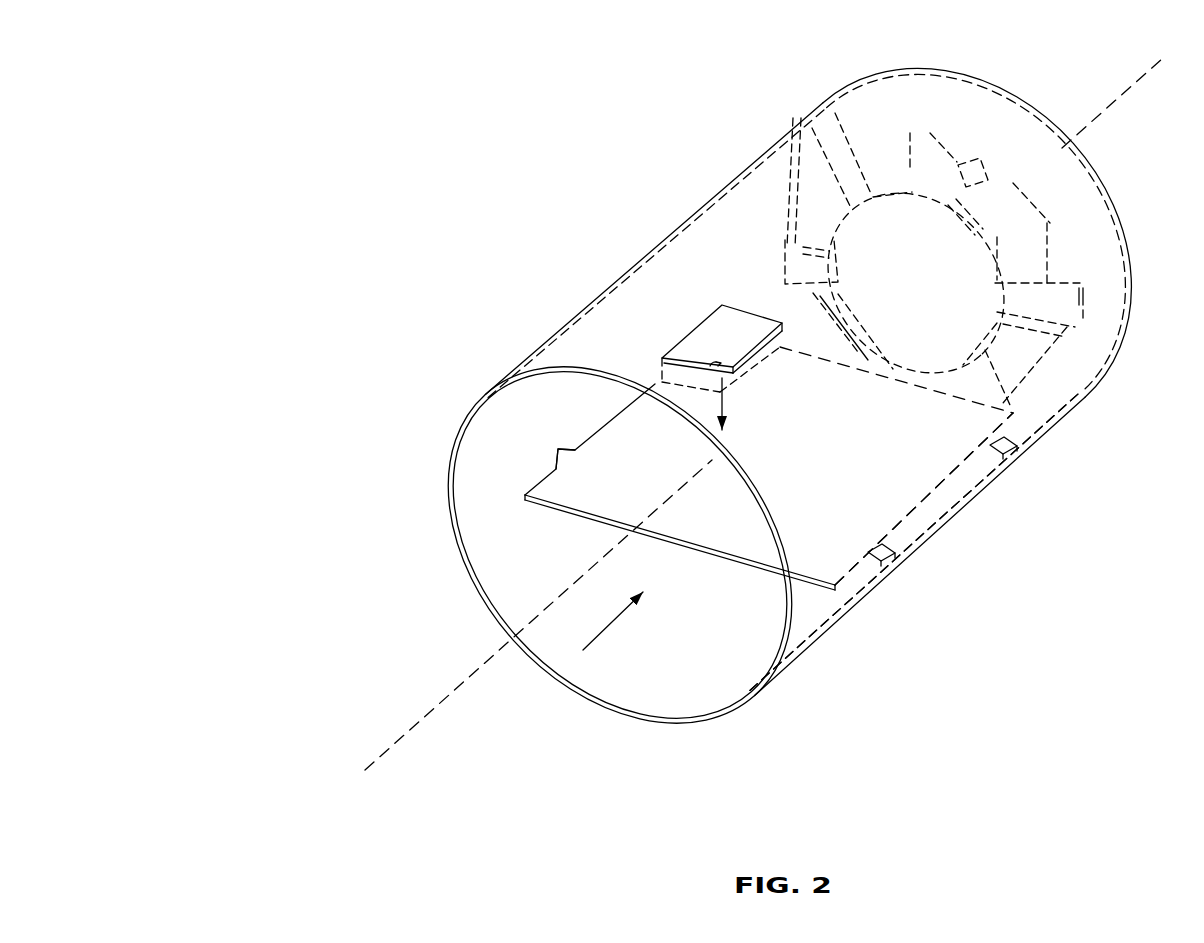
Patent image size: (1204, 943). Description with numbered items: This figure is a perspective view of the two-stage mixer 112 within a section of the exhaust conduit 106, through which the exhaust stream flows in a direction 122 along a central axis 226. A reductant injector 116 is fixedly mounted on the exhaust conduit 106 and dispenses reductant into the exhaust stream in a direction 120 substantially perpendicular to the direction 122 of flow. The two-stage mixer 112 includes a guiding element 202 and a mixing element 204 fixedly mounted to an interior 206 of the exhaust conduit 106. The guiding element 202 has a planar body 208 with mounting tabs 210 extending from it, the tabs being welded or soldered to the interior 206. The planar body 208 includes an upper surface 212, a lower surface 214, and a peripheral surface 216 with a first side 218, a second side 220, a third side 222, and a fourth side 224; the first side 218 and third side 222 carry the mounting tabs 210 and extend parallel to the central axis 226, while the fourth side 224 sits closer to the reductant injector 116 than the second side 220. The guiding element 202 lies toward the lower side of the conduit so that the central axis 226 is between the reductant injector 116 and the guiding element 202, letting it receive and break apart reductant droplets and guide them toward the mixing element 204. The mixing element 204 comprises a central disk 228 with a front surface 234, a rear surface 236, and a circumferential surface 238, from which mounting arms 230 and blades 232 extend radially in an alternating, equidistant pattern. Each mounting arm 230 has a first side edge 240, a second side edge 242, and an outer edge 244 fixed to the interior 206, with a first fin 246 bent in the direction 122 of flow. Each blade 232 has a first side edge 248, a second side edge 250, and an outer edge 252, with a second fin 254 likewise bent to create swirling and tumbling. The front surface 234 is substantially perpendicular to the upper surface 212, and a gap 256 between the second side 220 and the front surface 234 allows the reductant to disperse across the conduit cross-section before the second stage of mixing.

The exhaust conduit 106 is at (783, 421).
The two-stage mixer 112 is at (734, 421).
The reductant injector 116 is at (690, 350).
The direction 120 is at (727, 405).
The direction of flow of the exhaust stream 122 is at (603, 627).
The guiding element 202 is at (518, 415).
The mixing element 204 is at (767, 194).
The interior 206 is at (675, 695).
The planar body 208 is at (769, 468).
The mounting tabs 210 is at (560, 455).
The upper surface 212 is at (930, 475).
The lower surface 214 is at (812, 592).
The peripheral surface 216 is at (603, 513).
The first side 218 is at (627, 415).
The second side 220 is at (877, 378).
The third side 222 is at (927, 513).
The fourth side 224 is at (698, 543).
The central axis 226 is at (392, 718).
The central disk 228 is at (916, 282).
The mounting arms 230 is at (872, 79).
The blades 232 is at (780, 257).
The front surface 234 is at (980, 360).
The rear surface 236 is at (905, 190).
The circumferential surface 238 is at (845, 223).
The first side edge 240 is at (1036, 280).
The second side edge 242 is at (1013, 312).
The outer edge 244 is at (1085, 296).
The first fin 246 is at (1035, 198).
The first side edge 248 is at (934, 194).
The second side edge 250 is at (972, 222).
The outer edge 252 is at (980, 184).
The second fin 254 is at (925, 128).
The gap 256 is at (1040, 402).